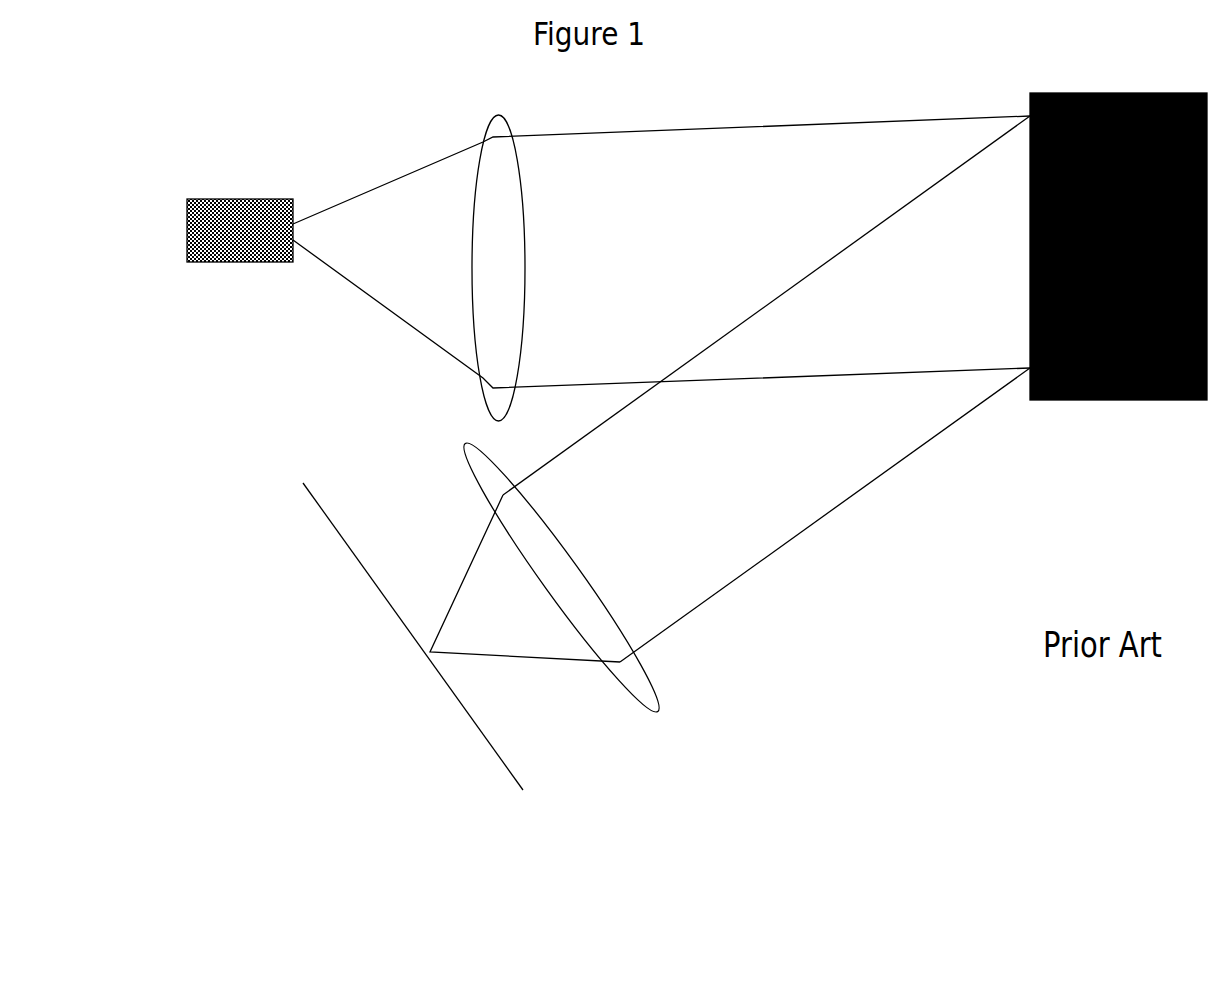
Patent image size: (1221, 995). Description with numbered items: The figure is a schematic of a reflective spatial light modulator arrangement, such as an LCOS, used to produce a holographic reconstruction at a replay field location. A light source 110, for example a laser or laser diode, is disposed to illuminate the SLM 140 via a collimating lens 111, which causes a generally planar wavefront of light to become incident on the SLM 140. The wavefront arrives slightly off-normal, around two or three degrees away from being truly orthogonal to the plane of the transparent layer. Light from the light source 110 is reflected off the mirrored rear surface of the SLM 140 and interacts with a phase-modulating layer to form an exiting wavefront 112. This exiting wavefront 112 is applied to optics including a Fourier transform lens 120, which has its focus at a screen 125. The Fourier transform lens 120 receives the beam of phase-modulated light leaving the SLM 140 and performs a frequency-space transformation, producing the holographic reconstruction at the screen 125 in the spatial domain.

The light source 110 is at (240, 275).
The collimating lens 111 is at (472, 116).
The exiting wavefront 112 is at (925, 452).
The Fourier transform lens 120 is at (682, 673).
The screen 125 is at (313, 517).
The SLM 140 is at (1136, 430).